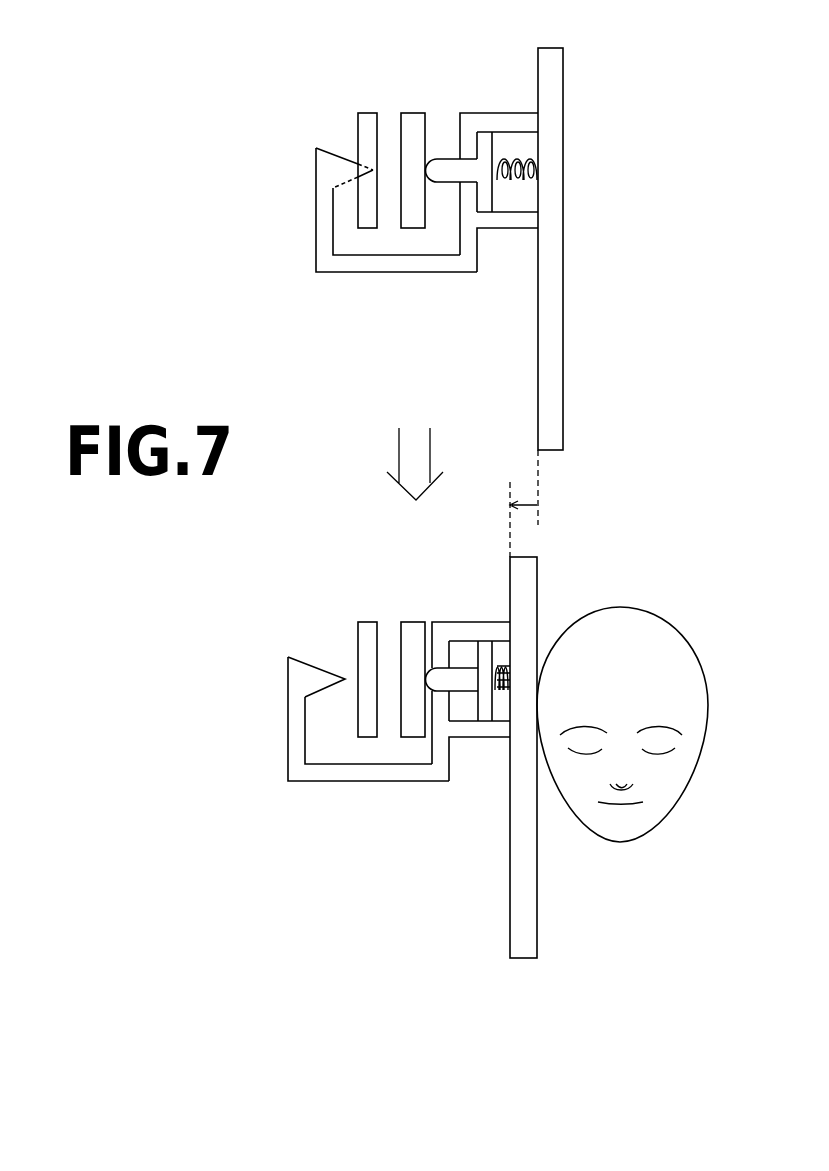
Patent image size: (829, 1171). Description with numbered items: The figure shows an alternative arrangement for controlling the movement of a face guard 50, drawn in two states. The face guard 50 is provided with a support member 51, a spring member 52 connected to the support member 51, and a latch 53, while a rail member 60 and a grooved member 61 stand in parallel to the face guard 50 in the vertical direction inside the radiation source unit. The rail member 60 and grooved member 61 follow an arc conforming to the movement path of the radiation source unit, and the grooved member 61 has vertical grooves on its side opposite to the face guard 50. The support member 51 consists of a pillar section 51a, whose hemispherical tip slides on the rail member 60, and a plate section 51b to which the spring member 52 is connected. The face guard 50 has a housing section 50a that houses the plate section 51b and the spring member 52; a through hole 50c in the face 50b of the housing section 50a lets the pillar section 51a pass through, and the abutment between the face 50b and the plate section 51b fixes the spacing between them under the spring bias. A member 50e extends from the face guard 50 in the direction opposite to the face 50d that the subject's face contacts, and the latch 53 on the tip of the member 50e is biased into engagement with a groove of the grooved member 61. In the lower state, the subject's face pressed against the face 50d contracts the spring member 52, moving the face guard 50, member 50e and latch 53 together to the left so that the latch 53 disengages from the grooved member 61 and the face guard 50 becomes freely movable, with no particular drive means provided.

The face guard 50 is at (553, 63).
The housing section 50a is at (521, 149).
The face of the housing section 50b is at (468, 115).
The through hole 50c is at (468, 192).
The face where the face of the subject contacts 50d is at (575, 302).
The member 50e is at (358, 266).
The support member 51 is at (446, 172).
The pillar section 51a is at (445, 178).
The plate section 51b is at (489, 140).
The spring member 52 is at (520, 181).
The latch 53 is at (333, 148).
The rail member 60 is at (412, 112).
The grooved member 61 is at (368, 112).